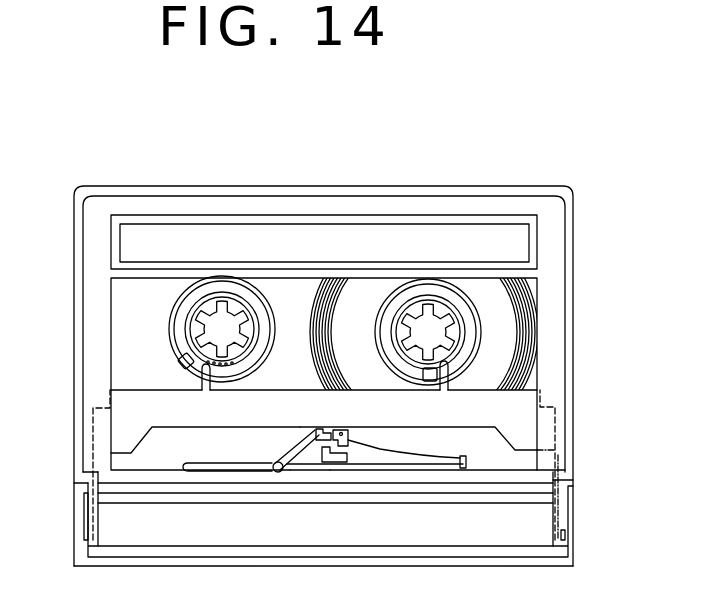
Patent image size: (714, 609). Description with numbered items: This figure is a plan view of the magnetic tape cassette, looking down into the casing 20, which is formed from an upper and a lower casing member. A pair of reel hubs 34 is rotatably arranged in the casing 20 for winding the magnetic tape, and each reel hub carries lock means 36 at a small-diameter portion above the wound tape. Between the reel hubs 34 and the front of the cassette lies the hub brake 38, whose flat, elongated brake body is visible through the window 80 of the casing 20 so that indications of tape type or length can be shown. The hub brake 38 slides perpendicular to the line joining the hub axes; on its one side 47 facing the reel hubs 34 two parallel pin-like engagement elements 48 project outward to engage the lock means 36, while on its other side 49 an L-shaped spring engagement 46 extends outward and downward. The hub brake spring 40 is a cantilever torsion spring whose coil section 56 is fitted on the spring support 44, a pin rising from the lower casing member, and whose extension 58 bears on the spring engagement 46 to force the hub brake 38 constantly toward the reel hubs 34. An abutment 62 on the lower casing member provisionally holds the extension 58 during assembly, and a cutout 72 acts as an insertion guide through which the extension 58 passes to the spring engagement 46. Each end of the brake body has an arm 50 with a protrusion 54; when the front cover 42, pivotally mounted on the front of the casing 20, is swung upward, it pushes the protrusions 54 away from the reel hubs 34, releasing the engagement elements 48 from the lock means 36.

The casing 20 is at (627, 162).
The window 80 is at (110, 349).
The reel hubs 34 is at (276, 301).
The lock means 36 is at (199, 370).
The engagement element 48 is at (450, 374).
The one side 47 is at (282, 390).
The other side 49 is at (212, 427).
The hub brake 38 is at (462, 420).
The hub brake spring 40 is at (297, 447).
The spring support 44 is at (281, 473).
The spring engagement 46 is at (317, 430).
The coil section 56 is at (276, 473).
The extension 58 is at (312, 470).
The abutment 62 is at (340, 436).
The cutout 72 is at (338, 462).
The arm 50 is at (111, 454).
The protrusion 54 is at (564, 535).
The front cover 42 is at (573, 549).